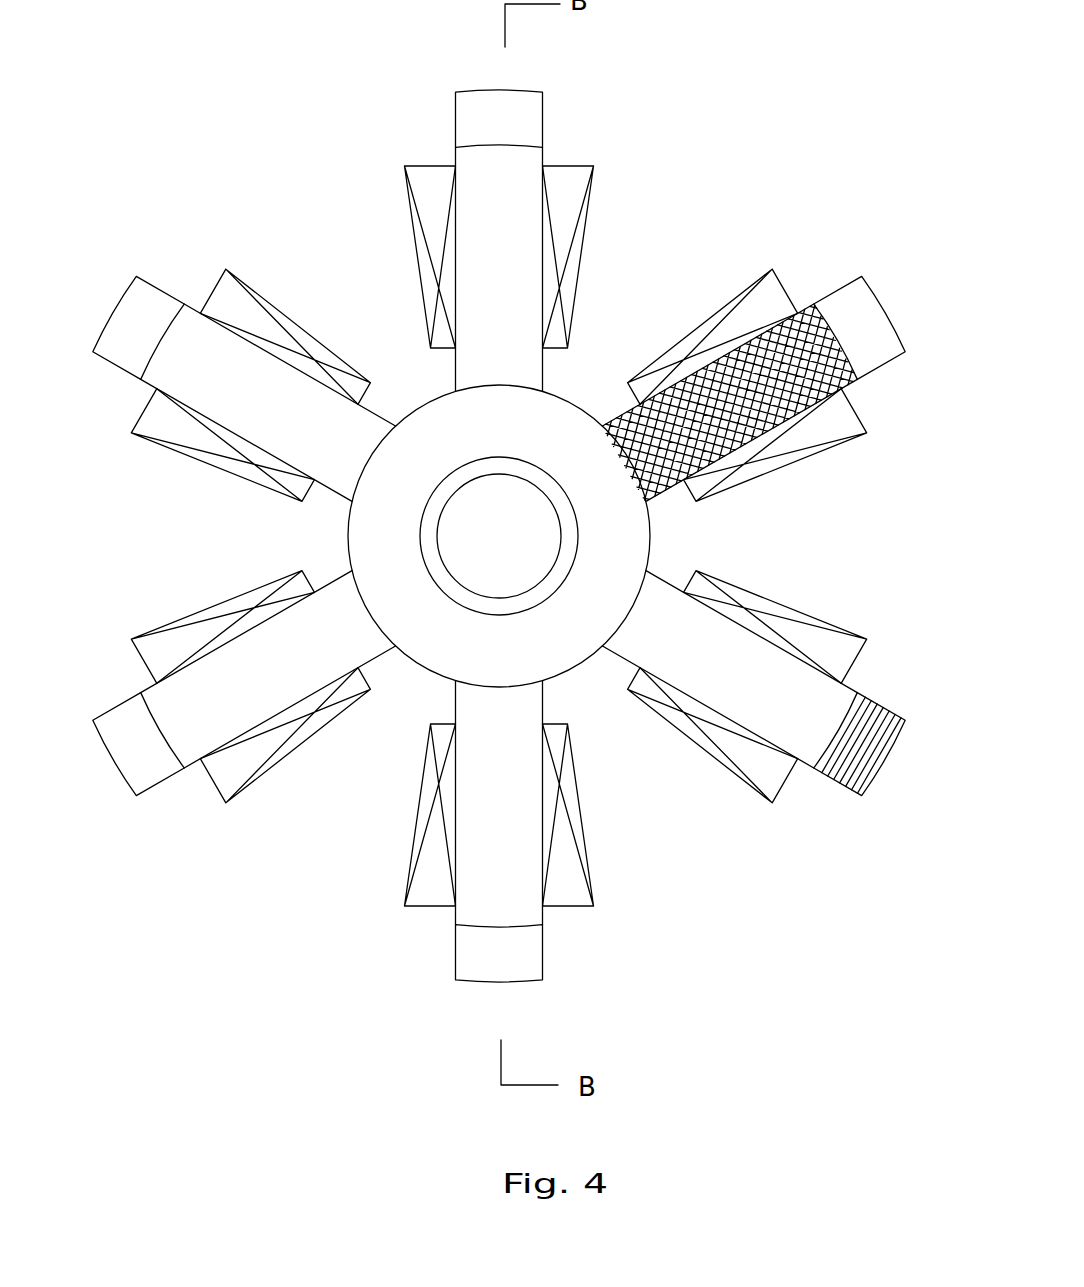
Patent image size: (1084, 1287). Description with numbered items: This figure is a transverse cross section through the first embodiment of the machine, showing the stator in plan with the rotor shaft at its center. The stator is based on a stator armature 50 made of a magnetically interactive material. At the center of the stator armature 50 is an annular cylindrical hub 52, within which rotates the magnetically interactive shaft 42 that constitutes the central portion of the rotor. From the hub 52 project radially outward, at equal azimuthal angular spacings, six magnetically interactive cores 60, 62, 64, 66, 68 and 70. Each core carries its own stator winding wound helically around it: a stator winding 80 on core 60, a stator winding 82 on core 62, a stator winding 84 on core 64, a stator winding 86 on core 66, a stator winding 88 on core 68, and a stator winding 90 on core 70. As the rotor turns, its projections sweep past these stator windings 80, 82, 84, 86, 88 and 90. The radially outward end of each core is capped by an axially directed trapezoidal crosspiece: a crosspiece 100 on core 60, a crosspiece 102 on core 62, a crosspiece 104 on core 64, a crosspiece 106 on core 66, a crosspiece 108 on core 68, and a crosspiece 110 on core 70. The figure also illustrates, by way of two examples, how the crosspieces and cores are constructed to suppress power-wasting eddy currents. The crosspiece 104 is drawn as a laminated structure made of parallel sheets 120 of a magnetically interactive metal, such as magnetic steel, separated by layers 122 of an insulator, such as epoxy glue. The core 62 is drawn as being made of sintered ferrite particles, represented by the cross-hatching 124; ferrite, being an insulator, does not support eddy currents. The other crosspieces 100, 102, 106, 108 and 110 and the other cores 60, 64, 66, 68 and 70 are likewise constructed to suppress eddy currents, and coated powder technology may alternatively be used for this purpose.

The shaft 42 is at (483, 553).
The stator armature 50 is at (690, 137).
The hub 52 is at (543, 451).
The core 60 is at (491, 268).
The core 62 is at (667, 494).
The core 64 is at (706, 680).
The core 66 is at (481, 805).
The core 68 is at (221, 691).
The core 70 is at (209, 385).
The stator winding 80 is at (437, 192).
The stator winding 82 is at (780, 303).
The stator winding 84 is at (785, 618).
The stator winding 86 is at (428, 845).
The stator winding 88 is at (185, 612).
The stator winding 90 is at (223, 302).
The crosspiece 100 is at (480, 138).
The crosspiece 102 is at (843, 338).
The crosspiece 104 is at (872, 713).
The crosspiece 106 is at (478, 965).
The crosspiece 108 is at (113, 753).
The crosspiece 110 is at (114, 337).
The sheets 120 is at (898, 735).
The layers 122 is at (896, 745).
The cross-hatching 124 is at (812, 312).